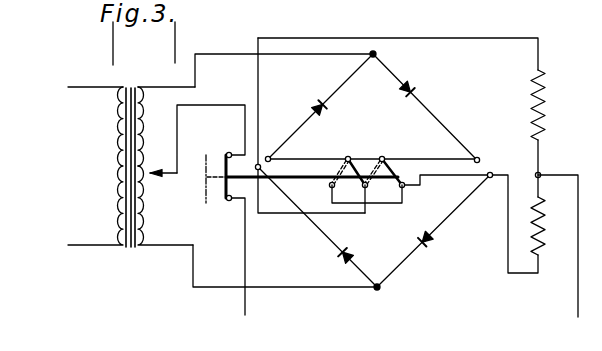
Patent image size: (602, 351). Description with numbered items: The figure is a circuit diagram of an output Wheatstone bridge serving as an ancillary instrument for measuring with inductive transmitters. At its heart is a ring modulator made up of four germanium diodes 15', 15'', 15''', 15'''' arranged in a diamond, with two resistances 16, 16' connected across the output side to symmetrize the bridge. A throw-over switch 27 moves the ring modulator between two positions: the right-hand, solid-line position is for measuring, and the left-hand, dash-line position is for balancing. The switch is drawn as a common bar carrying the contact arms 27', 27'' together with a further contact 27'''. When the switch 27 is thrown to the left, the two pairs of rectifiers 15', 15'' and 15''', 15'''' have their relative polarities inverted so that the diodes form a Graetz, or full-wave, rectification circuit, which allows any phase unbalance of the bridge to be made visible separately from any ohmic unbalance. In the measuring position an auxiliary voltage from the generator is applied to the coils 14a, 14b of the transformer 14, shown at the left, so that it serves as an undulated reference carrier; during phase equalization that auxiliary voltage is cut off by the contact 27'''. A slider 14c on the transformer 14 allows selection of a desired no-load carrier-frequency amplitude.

The transformer 14 is at (130, 259).
The coil 14a is at (160, 70).
The coil 14b is at (140, 219).
The slider 14c is at (162, 175).
The germanium diode 15' is at (320, 106).
The germanium diode 15'' is at (425, 107).
The germanium diode 15''' is at (433, 231).
The germanium diode 15'''' is at (317, 227).
The resistance 16 is at (558, 102).
The resistance 16' is at (545, 250).
The throw-over switch 27 is at (302, 180).
The switch contact arm 27' is at (393, 159).
The switch contact arm 27'' is at (365, 166).
The contact 27''' is at (211, 210).